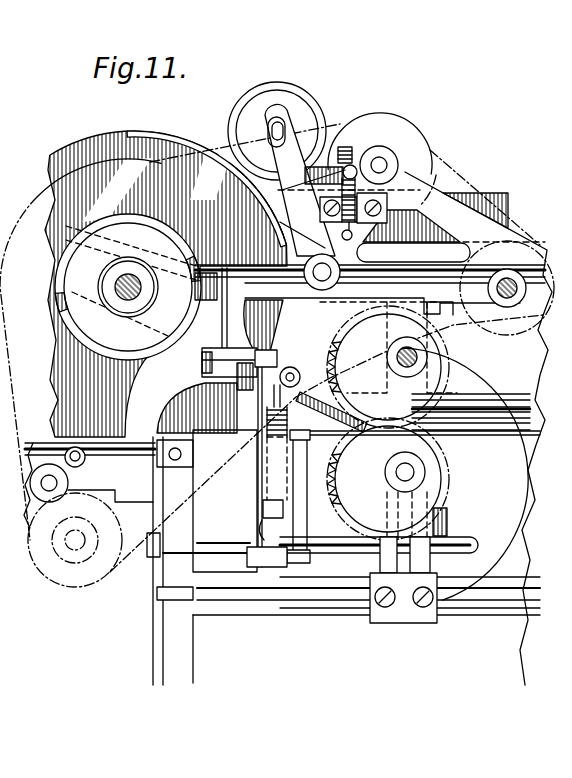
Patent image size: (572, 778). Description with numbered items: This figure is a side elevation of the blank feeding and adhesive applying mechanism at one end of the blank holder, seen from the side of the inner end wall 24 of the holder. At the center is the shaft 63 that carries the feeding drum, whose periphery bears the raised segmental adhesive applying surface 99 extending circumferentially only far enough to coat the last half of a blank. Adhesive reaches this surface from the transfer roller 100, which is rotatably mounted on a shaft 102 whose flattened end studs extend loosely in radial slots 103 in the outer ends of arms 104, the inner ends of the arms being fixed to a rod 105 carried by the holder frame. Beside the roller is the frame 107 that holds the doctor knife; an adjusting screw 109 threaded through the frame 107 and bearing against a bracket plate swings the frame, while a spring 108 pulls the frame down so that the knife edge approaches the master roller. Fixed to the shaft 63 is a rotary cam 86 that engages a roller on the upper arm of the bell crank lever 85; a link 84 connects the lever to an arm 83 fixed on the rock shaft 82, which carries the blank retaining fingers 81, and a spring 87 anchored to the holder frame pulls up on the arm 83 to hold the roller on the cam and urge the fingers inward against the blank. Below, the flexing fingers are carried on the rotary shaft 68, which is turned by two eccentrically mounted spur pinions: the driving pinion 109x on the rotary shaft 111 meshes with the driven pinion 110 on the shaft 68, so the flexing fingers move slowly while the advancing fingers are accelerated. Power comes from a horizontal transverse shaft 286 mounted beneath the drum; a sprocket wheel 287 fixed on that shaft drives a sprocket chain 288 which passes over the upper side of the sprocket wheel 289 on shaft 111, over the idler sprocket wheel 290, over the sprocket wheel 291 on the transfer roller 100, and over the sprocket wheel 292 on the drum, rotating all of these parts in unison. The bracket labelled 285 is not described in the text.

The inner end wall 24 is at (162, 633).
The shaft 63 is at (132, 276).
The rotary shaft 68 is at (399, 361).
The blank retaining fingers 81 is at (300, 480).
The rock shaft 82 is at (222, 535).
The arm 83 is at (250, 557).
The link 84 is at (258, 492).
The bell crank lever 85 is at (222, 339).
The rotary cam 86 is at (170, 230).
The spring 87 is at (267, 425).
The raised segmental adhesive applying surface 99 is at (153, 140).
The transfer roller 100 is at (333, 135).
The shaft 102 is at (280, 133).
The radial slots 103 is at (283, 114).
The arms 104 is at (272, 158).
The rod 105 is at (316, 279).
The frame 107 is at (318, 166).
The spring 108 is at (320, 206).
The adjusting screw 109 is at (347, 158).
The driving spur pinion 109x is at (350, 513).
The driven spur pinion 110 is at (352, 335).
The rotary shaft 111 is at (398, 473).
The bracket 285 is at (15, 523).
The horizontal transverse shaft 286 is at (75, 530).
The sprocket wheel 287 is at (114, 524).
The sprocket chain 288 is at (182, 150).
The sprocket wheel 289 is at (490, 388).
The idler sprocket wheel 290 is at (479, 314).
The sprocket wheel 291 is at (432, 168).
The sprocket wheel 292 is at (27, 216).